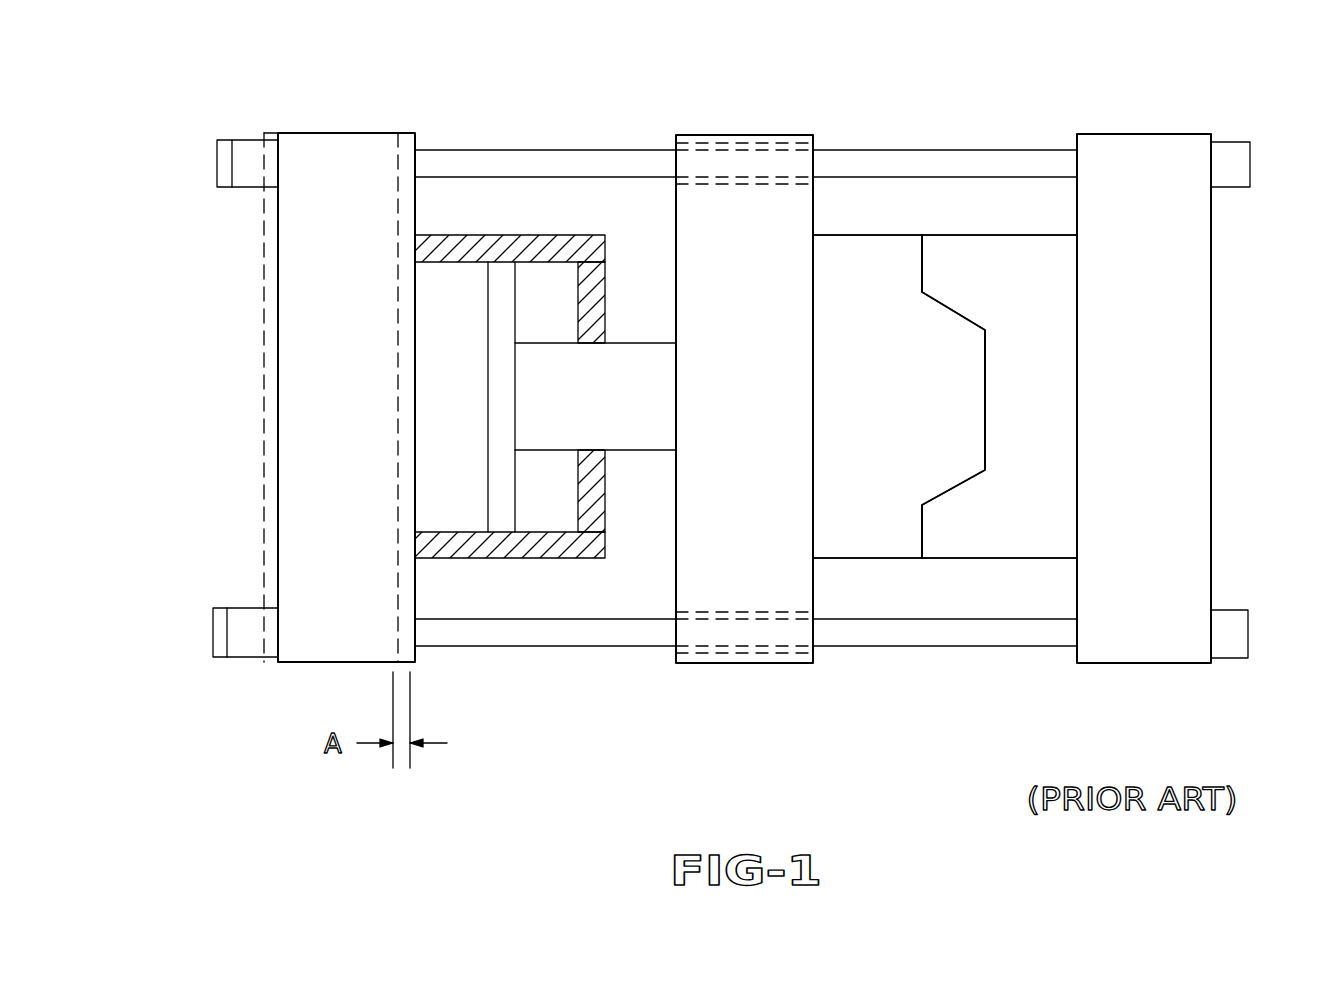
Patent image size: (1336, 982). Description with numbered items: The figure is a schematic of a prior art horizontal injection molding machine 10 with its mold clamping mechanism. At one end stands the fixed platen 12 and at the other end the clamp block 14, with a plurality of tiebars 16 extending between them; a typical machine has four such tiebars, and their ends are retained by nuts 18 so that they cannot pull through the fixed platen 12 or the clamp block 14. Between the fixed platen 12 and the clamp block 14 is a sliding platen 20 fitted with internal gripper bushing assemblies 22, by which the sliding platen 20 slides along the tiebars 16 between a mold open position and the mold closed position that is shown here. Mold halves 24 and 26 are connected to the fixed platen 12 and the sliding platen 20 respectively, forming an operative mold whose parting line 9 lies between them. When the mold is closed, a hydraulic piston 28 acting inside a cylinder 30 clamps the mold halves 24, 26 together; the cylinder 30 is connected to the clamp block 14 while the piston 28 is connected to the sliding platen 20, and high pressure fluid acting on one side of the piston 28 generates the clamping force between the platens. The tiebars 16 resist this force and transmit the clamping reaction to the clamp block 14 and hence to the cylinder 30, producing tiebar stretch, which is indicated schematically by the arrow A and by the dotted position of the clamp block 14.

The mold parting line 9 is at (928, 297).
The machine 10 is at (721, 684).
The fixed platen 12 is at (1130, 170).
The clamp block 14 is at (345, 157).
The tiebars 16 is at (894, 167).
The nuts 18 is at (247, 177).
The sliding platen 20 is at (768, 224).
The gripper bushing assemblies 22 is at (749, 150).
The mold half 24 is at (877, 398).
The mold half 26 is at (1039, 398).
The hydraulic piston 28 is at (540, 370).
The cylinder 30 is at (452, 246).